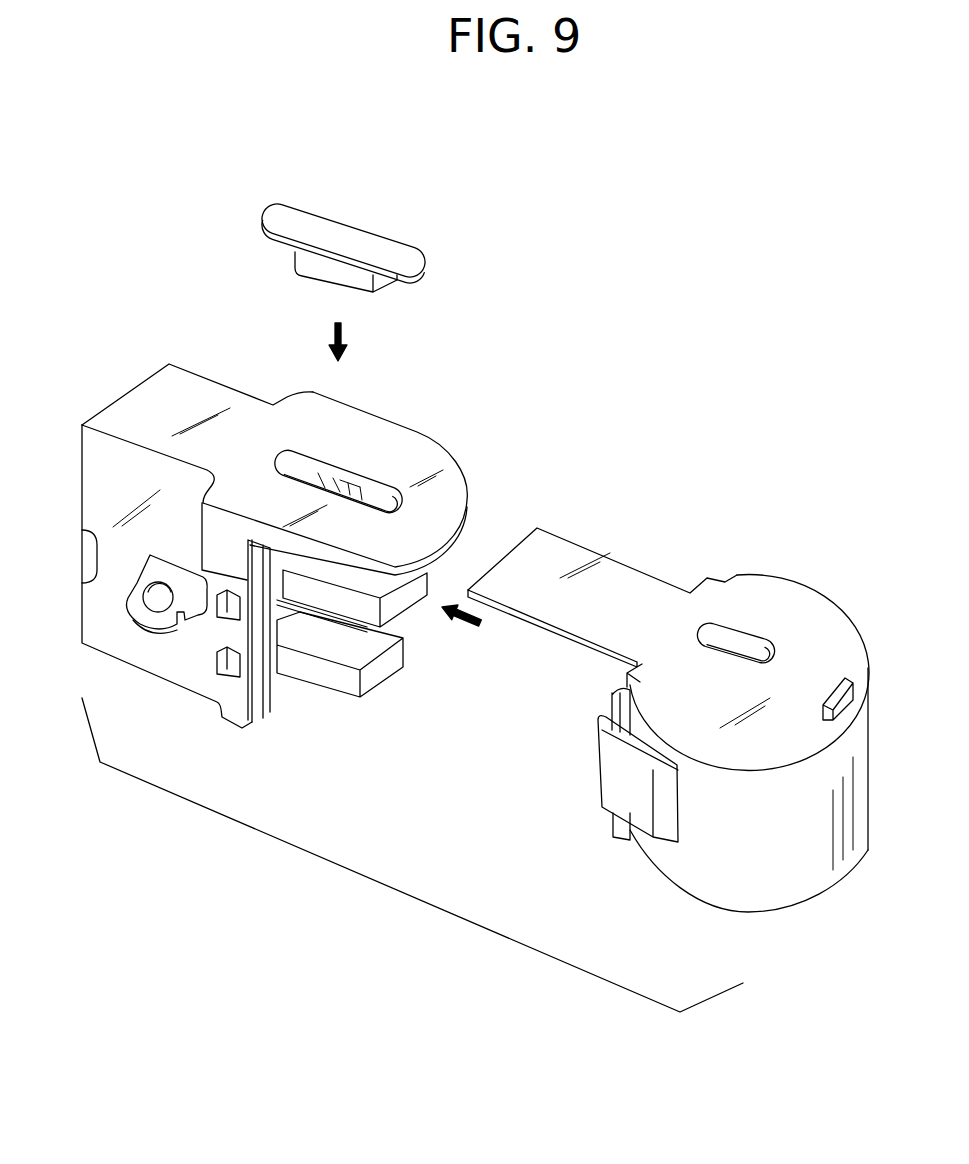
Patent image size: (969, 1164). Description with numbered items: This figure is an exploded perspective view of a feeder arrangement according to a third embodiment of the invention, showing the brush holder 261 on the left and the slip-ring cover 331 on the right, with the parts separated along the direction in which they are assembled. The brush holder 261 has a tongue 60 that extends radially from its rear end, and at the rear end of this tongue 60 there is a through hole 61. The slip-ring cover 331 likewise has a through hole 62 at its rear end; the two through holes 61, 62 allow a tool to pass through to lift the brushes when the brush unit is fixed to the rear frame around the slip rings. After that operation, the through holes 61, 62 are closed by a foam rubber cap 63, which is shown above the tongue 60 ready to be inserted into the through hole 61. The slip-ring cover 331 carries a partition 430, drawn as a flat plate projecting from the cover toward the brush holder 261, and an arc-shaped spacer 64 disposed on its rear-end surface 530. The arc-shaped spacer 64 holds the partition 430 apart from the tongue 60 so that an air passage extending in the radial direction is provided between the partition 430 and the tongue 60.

The tongue 60 is at (425, 455).
The through hole 61 is at (373, 500).
The through hole 62 is at (742, 660).
The foam rubber cap 63 is at (375, 243).
The arc-shaped spacer 64 is at (853, 667).
The brush holder 261 is at (230, 407).
The slip-ring cover 331 is at (780, 582).
The partition 430 is at (538, 617).
The rear-end surface 530 is at (742, 607).